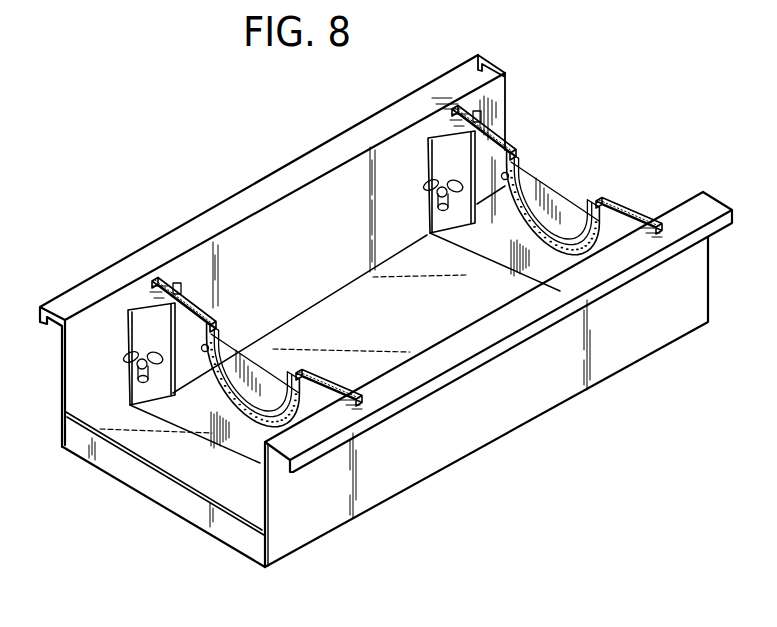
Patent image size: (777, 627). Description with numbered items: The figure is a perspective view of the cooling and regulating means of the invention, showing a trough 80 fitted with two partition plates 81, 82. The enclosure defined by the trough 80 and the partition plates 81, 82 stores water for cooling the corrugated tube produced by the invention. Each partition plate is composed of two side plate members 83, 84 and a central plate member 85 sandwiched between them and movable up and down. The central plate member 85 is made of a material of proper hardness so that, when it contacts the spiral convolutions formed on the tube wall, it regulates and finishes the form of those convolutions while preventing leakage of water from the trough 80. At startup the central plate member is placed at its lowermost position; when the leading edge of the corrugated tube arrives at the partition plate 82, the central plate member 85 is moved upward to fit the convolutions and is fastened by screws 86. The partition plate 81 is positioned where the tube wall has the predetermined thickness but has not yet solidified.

The trough 80 is at (517, 452).
The partition plate 81 is at (240, 418).
The partition plate 82 is at (537, 242).
The side plate member 83 is at (222, 348).
The side plate member 84 is at (332, 383).
The central plate member 85 is at (244, 398).
The screws 86 is at (136, 373).